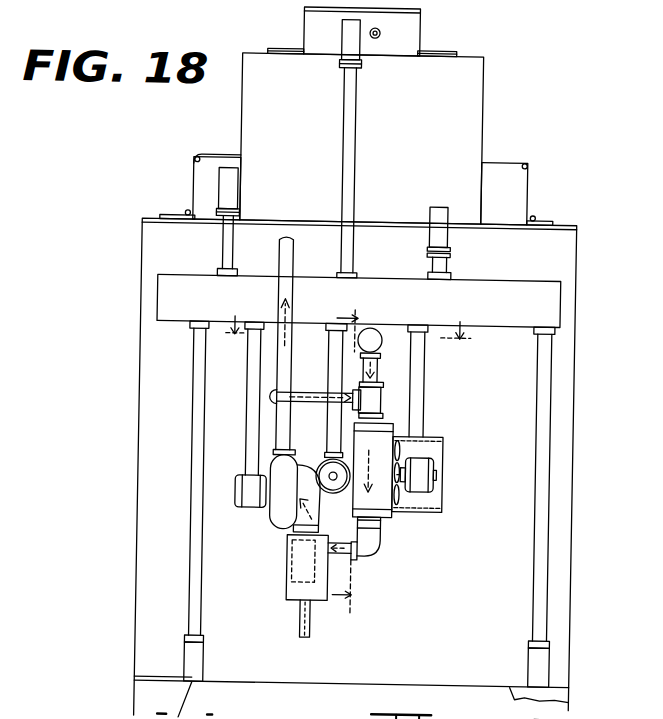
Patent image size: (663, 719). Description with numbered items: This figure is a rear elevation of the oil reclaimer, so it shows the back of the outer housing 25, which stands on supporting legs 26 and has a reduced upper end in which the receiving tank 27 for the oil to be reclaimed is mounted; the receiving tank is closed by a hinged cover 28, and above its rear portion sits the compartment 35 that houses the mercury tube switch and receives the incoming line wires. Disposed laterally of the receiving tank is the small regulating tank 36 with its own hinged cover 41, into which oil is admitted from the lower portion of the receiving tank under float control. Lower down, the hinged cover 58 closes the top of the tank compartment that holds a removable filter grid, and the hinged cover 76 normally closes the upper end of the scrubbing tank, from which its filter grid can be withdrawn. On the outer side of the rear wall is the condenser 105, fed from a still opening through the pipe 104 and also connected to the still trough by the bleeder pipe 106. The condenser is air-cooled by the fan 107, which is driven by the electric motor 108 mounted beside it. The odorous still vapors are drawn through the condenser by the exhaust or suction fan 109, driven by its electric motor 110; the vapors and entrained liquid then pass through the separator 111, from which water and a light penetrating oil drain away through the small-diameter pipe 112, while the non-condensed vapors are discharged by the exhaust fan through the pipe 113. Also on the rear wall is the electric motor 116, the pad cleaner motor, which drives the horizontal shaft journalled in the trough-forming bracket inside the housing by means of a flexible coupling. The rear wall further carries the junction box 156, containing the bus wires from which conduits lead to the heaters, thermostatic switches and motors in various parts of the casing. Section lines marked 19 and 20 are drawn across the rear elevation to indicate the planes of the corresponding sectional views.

The section line 19- 19 is at (350, 462).
The section line 20- 20 is at (353, 337).
The outer housing 25 is at (155, 384).
The supporting legs 26 is at (151, 705).
The receiving tank 27 is at (453, 92).
The hinged cover 28 is at (287, 50).
The compartment 35 is at (401, 26).
The regulating tank 36 is at (204, 180).
The hinged cover 41 is at (214, 157).
The hinged cover 58 is at (170, 215).
The hinged cover 76 is at (550, 220).
The junction box 156 is at (491, 303).
The pipe 104 is at (372, 337).
The condenser 105 is at (379, 503).
The bleeder pipe 106 is at (307, 396).
The fan 107 is at (402, 487).
The electric motor 108 is at (422, 477).
The exhaust fan 109 is at (284, 516).
The electric motor 110 is at (252, 497).
The separator 111 is at (310, 584).
The pipe 112 is at (304, 618).
The pipe 113 is at (285, 258).
The electric motor 116 is at (328, 464).